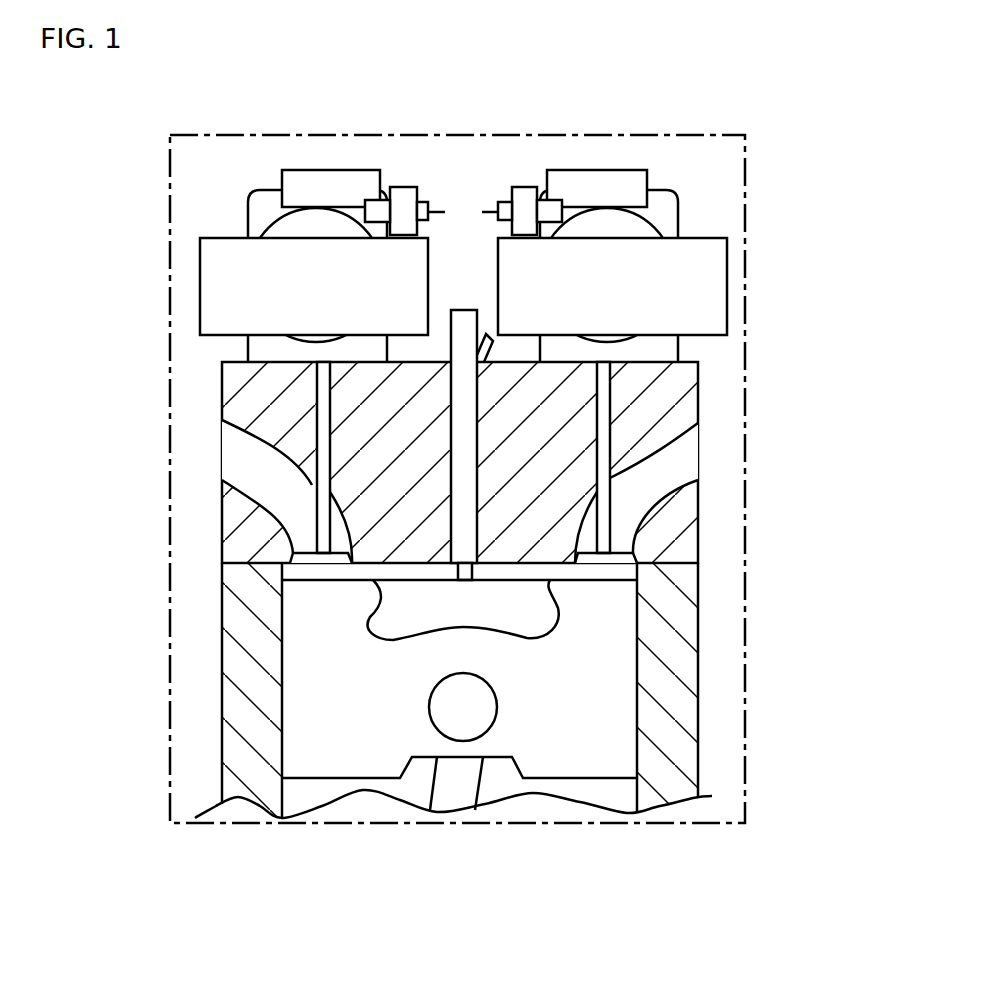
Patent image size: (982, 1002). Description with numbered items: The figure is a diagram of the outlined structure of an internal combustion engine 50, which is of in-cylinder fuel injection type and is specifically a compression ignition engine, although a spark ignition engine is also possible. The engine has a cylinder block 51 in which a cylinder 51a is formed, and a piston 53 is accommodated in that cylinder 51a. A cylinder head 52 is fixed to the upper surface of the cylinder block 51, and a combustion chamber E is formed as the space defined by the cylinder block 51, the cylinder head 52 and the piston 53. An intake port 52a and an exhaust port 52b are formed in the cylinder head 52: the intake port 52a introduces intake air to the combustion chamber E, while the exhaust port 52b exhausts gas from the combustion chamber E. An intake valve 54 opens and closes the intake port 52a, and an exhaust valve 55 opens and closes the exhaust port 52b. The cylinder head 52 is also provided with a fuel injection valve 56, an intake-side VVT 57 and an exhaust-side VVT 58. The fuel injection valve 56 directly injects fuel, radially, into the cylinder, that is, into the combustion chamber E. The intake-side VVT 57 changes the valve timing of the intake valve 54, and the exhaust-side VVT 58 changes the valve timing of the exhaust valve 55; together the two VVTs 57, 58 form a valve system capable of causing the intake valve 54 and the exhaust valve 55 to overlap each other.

The internal combustion engine 50 is at (170, 190).
The cylinder block 51 is at (670, 693).
The cylinder 51a is at (636, 741).
The cylinder head 52 is at (232, 523).
The intake port 52a is at (665, 443).
The exhaust port 52b is at (323, 465).
The piston 53 is at (390, 687).
The intake valve 54 is at (690, 505).
The exhaust valve 55 is at (230, 497).
The fuel injection valve 56 is at (462, 478).
The intake-side VVT 57 is at (608, 170).
The exhaust-side VVT 58 is at (308, 170).
The combustion chamber E is at (485, 573).